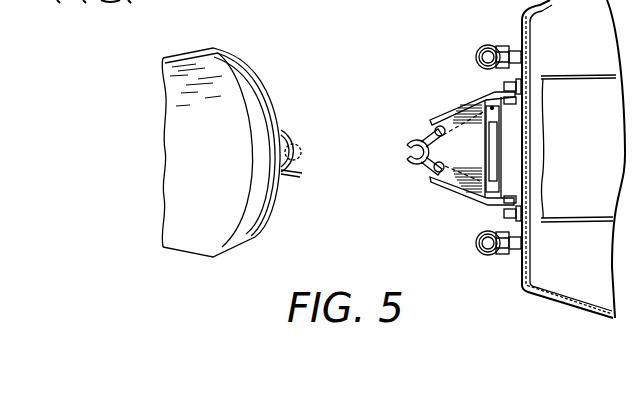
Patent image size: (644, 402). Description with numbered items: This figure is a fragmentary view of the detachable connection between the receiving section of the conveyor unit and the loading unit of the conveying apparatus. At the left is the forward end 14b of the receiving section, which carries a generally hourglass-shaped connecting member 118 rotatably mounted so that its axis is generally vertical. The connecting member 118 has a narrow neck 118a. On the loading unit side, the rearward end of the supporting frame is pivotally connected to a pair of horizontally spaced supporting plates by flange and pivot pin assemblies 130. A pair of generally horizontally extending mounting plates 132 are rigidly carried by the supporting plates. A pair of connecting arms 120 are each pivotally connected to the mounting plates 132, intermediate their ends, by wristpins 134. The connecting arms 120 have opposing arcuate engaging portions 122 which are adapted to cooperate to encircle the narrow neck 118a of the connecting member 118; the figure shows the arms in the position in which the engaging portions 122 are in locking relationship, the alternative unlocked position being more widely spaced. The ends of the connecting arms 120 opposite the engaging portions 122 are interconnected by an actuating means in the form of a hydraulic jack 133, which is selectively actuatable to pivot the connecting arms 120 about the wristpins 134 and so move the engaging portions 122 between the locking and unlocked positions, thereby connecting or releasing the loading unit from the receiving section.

The forward end of the receiving section 14b is at (268, 83).
The connecting member 118 is at (307, 133).
The narrow neck 118a is at (302, 178).
The connecting arms 120 is at (469, 98).
The engaging portions 122 is at (400, 157).
The flange and pivot pin assemblies 130 is at (532, 80).
The mounting plates 132 is at (453, 142).
The hydraulic jack 133 is at (495, 148).
The wristpins 134 is at (430, 130).